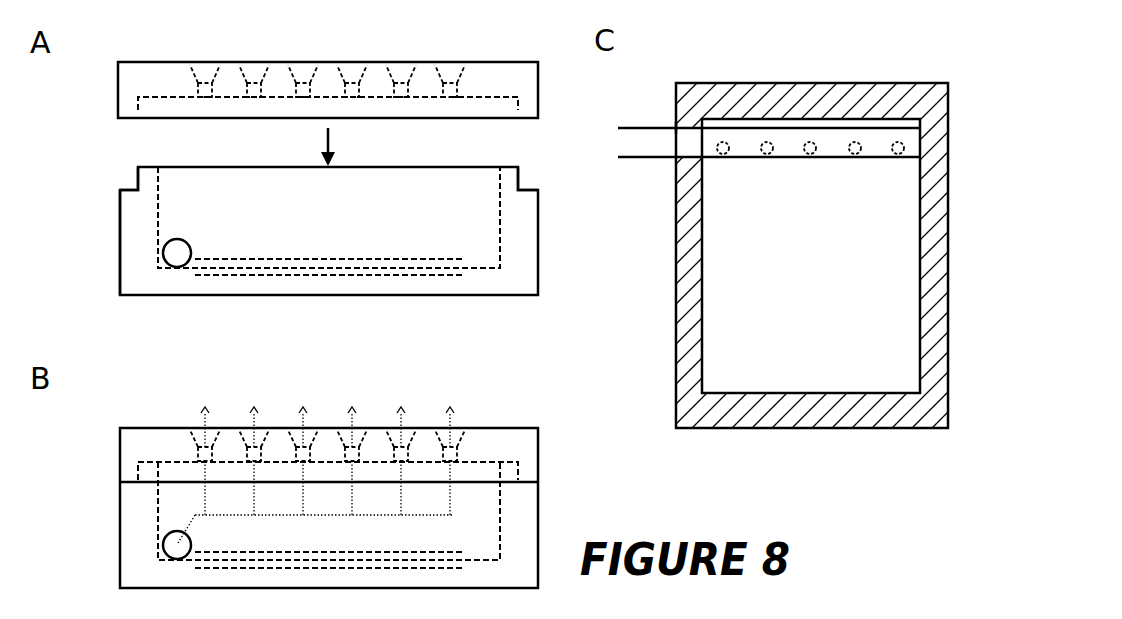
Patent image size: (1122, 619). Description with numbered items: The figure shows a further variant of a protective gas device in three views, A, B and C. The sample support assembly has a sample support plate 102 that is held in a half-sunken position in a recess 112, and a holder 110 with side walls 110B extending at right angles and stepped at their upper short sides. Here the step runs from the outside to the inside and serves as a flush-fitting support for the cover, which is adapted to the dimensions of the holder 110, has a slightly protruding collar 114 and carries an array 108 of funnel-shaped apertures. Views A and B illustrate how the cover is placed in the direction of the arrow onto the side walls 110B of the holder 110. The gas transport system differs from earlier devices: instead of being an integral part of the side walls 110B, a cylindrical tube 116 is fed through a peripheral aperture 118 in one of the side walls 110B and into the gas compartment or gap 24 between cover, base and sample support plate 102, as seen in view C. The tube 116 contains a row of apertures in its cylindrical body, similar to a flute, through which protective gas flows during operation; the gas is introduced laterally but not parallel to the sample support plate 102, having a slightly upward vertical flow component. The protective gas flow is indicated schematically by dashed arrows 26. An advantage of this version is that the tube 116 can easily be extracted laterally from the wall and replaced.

The array of funnel-shaped apertures 108 is at (212, 50).
The collar 114 is at (141, 112).
The holder 110 is at (180, 305).
The side walls 110B is at (137, 230).
The cylindrical tube 116 is at (168, 236).
The recess 112 is at (423, 273).
The sample support plate 102 is at (312, 273).
The dashed arrows 26 is at (435, 516).
The gap 24 is at (823, 268).
The peripheral aperture 118 is at (676, 128).